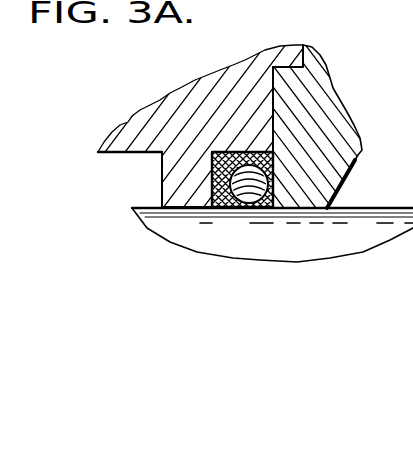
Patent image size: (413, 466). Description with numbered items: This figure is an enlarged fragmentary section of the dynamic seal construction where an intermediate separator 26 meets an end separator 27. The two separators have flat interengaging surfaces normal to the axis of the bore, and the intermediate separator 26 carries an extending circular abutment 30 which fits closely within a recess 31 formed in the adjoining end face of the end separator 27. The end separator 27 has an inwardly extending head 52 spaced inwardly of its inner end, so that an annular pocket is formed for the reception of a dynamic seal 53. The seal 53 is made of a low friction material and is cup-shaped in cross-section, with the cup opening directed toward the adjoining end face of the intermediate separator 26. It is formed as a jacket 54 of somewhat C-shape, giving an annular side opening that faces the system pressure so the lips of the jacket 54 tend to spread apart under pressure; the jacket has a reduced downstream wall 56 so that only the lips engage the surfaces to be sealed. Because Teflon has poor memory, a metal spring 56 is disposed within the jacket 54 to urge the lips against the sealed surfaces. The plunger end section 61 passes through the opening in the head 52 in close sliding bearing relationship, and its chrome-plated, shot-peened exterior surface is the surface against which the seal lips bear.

The intermediate separator 26 is at (335, 77).
The end separator 27 is at (158, 101).
The circular abutment 30 is at (285, 90).
The recess 31 is at (276, 112).
The inwardly extending head 52 is at (168, 180).
The dynamic seal 53 is at (205, 186).
The jacket 54 is at (232, 175).
The metal spring 56 is at (270, 184).
The plunger end section 61 is at (373, 252).